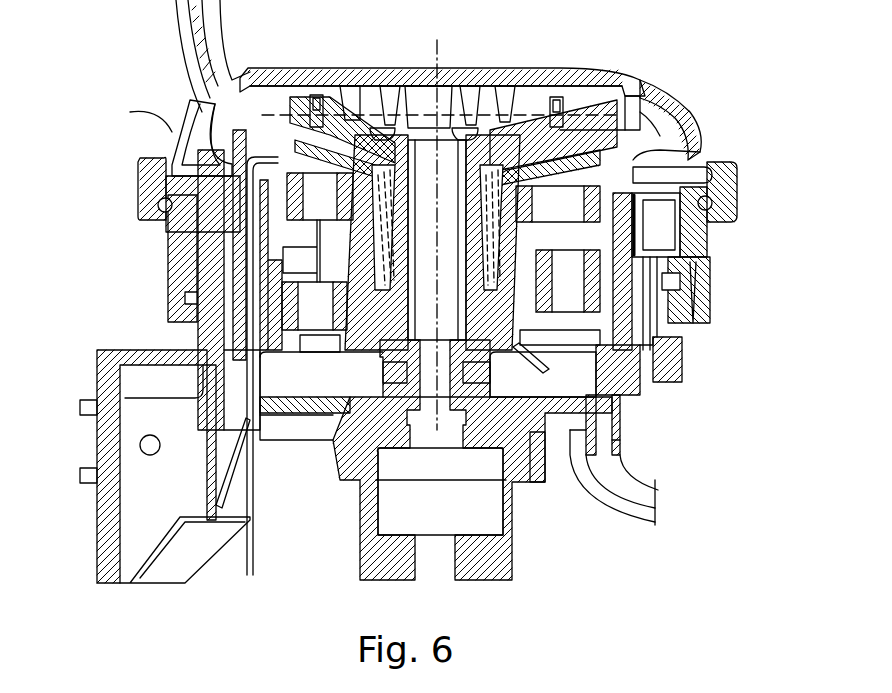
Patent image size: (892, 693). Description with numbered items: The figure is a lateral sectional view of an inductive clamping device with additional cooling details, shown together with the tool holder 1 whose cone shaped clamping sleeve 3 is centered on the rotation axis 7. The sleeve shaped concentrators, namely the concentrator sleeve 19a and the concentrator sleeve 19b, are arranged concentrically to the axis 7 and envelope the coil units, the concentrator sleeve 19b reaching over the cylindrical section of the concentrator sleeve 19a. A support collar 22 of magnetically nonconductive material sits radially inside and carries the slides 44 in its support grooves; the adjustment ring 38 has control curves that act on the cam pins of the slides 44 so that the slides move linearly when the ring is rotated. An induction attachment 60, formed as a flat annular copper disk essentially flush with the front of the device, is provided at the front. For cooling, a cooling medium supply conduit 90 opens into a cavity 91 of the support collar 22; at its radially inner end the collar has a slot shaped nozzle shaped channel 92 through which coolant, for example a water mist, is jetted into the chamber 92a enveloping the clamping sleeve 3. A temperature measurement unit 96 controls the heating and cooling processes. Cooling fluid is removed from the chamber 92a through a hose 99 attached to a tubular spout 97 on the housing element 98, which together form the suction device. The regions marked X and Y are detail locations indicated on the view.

The tool holder 1 is at (543, 447).
The clamping sleeve 3 is at (183, 298).
The rotation axis 7 is at (440, 52).
The concentrator sleeve 19a is at (694, 290).
The concentrator sleeve 19b is at (636, 168).
The support collar 22 is at (240, 76).
The adjustment ring 38 is at (598, 88).
The slides 44 is at (498, 92).
The induction attachment 60 is at (286, 70).
The cooling medium supply conduit 90 is at (246, 314).
The cavity 91 is at (350, 78).
The slot shaped nozzle shaped channel 92 is at (392, 122).
The chamber 92a is at (358, 243).
The temperature measurement unit 96 is at (630, 386).
The tubular spout 97 is at (622, 428).
The housing element 98 is at (640, 340).
The hose 99 is at (586, 504).
The section X is at (170, 132).
The section Y is at (656, 104).